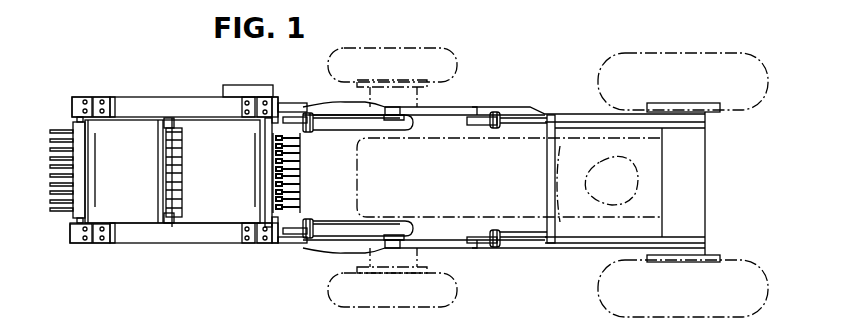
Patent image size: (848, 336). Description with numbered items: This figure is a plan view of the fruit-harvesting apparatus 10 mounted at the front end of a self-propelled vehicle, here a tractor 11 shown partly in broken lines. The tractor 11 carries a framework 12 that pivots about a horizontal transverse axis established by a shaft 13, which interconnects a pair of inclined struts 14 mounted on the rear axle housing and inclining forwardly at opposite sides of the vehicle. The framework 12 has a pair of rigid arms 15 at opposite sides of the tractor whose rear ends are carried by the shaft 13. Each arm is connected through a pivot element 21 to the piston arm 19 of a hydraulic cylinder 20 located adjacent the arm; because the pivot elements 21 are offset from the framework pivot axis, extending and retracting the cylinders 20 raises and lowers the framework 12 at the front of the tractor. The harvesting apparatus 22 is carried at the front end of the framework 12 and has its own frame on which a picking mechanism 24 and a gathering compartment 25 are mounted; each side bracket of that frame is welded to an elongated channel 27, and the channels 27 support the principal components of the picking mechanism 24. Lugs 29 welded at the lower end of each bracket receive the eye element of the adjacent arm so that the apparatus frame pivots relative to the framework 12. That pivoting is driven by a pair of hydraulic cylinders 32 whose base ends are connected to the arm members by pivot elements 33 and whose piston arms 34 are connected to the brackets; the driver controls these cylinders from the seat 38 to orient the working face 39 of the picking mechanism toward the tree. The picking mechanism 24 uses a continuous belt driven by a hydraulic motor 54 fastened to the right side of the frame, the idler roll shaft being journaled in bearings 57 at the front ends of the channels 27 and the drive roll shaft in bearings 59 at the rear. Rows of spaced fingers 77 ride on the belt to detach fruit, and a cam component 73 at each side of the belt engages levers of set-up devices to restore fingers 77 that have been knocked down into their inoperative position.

The apparatus 10 is at (112, 90).
The tractor 11 is at (732, 55).
The framework 12 is at (468, 103).
The shaft 13 is at (547, 173).
The inclined struts 14 is at (580, 120).
The rigid arms 15 is at (443, 108).
The piston arm 19 is at (483, 124).
The hydraulic cylinder 20 is at (527, 128).
The pivot element 21 is at (470, 115).
The harvesting apparatus 22 is at (222, 245).
The picking mechanism 24 is at (97, 197).
The gathering compartment 25 is at (305, 165).
The elongated channel 27 is at (190, 98).
The lugs 29 is at (290, 104).
The hydraulic cylinders 32 is at (377, 132).
The pivot elements 33 is at (370, 104).
The piston arms 34 is at (298, 134).
The seat 38 is at (607, 198).
The working face 39 is at (132, 169).
The hydraulic motor 54 is at (250, 85).
The bearings 57 is at (88, 97).
The bearings 59 is at (241, 106).
The cam component 73 is at (115, 102).
The fingers 77 is at (50, 175).